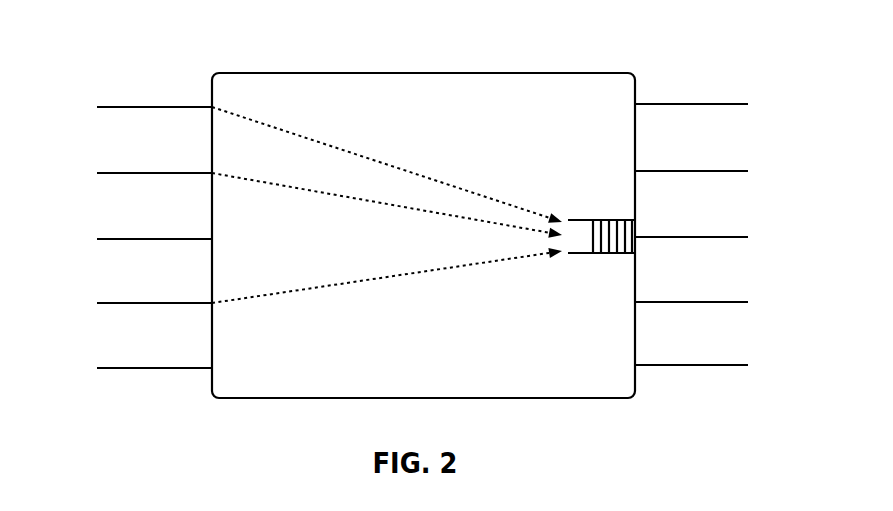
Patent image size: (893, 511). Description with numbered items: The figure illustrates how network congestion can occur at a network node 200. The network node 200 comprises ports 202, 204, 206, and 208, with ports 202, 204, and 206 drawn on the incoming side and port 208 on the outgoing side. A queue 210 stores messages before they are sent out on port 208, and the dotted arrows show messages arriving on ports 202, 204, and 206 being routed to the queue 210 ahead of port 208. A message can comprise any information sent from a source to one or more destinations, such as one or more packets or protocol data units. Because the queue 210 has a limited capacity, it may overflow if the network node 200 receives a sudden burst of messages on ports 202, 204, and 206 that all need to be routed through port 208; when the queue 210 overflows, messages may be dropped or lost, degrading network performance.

The network node 200 is at (513, 50).
The port 202 is at (306, 160).
The port 204 is at (306, 200).
The port 206 is at (306, 280).
The port 208 is at (716, 237).
The queue 210 is at (601, 223).